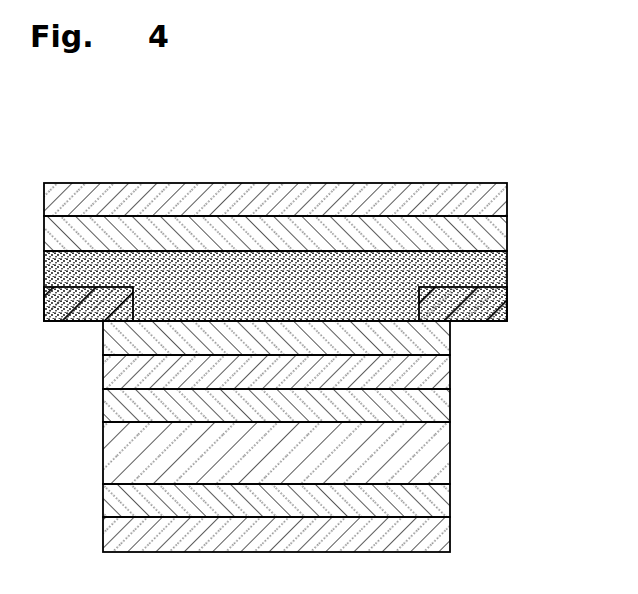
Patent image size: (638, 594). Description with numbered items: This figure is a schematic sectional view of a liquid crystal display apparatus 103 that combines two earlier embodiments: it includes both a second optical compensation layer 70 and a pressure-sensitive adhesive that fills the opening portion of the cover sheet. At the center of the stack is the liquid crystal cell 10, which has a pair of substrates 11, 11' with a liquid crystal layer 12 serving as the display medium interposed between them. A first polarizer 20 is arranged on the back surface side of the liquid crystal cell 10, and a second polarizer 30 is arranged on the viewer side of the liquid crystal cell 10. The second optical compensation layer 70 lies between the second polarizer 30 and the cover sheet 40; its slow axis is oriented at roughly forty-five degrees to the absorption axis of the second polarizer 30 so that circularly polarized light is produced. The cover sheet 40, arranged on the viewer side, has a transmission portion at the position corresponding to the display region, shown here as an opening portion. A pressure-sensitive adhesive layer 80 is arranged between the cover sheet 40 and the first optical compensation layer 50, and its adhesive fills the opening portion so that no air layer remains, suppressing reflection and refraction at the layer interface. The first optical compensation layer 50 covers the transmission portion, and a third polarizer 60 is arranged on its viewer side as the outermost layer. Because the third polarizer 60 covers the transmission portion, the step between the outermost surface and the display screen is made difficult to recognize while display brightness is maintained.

The liquid crystal display apparatus 103 is at (506, 127).
The third polarizer 60 is at (493, 203).
The first optical compensation layer 50 is at (495, 232).
The pressure-sensitive adhesive layer 80 is at (495, 268).
The cover sheet 40 is at (493, 305).
The second optical compensation layer 70 is at (450, 335).
The second polarizer 30 is at (450, 372).
The liquid crystal cell 10 is at (342, 452).
The substrate 11 is at (322, 405).
The liquid crystal layer 12 is at (450, 452).
The substrate 11' is at (324, 500).
The first polarizer 20 is at (450, 533).